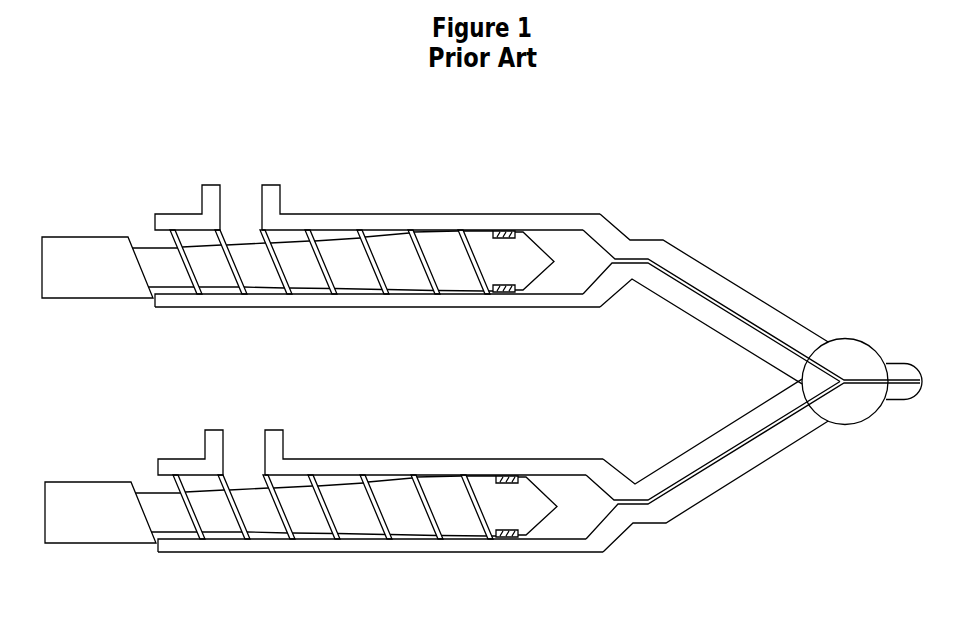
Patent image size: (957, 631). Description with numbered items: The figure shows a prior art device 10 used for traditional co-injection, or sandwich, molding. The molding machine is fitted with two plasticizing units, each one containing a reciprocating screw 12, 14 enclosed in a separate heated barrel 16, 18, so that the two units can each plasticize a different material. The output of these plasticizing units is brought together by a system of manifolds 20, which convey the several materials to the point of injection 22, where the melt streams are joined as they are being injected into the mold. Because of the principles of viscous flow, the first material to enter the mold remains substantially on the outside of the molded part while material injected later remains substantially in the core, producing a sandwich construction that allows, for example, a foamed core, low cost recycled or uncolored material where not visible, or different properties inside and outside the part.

The prior art twin-screw injection molding apparatus 10 is at (786, 624).
The reciprocating screw 12 is at (352, 288).
The reciprocating screw 14 is at (352, 530).
The heated barrel 16 is at (457, 310).
The heated barrel 18 is at (493, 552).
The manifolds 20 is at (747, 472).
The point of injection 22 is at (919, 393).